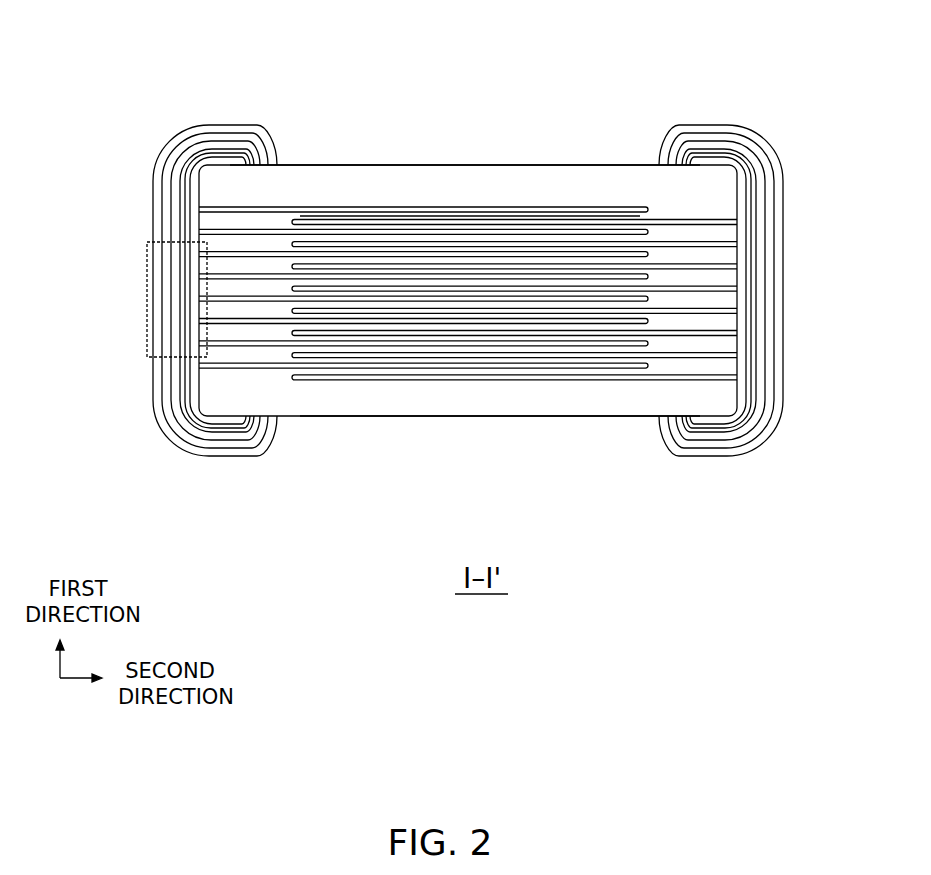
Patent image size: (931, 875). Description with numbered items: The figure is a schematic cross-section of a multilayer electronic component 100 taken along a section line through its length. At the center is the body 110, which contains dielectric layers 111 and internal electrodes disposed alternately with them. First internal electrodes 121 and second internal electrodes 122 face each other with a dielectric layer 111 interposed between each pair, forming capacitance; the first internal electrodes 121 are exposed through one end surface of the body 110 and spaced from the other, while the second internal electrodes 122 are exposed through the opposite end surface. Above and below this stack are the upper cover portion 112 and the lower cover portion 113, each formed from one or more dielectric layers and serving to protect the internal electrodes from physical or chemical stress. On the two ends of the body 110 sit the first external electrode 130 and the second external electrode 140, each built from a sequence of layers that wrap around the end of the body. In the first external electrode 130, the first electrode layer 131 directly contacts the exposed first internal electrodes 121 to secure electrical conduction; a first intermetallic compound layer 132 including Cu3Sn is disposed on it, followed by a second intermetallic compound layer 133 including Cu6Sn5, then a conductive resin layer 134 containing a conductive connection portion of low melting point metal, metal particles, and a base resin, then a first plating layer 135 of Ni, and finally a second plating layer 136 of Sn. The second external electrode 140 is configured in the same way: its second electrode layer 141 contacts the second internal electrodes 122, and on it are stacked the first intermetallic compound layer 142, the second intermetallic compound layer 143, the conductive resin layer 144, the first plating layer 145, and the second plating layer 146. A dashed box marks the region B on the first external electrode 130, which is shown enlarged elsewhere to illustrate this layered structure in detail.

The multilayer electronic component 100 is at (314, 76).
The body 110 is at (465, 417).
The dielectric layer 111 is at (445, 215).
The upper cover portion 112 is at (600, 190).
The lower cover portion 113 is at (545, 402).
The first internal electrode 121 is at (395, 207).
The second internal electrode 122 is at (517, 221).
The first external electrode 130 is at (222, 350).
The first electrode layer 131 is at (270, 424).
The first intermetallic compound layer 132 is at (246, 428).
The second intermetallic compound layer 133 is at (225, 432).
The conductive resin layer 134 is at (210, 440).
The first plating layer 135 is at (182, 444).
The second plating layer 136 is at (179, 327).
The second external electrode 140 is at (717, 350).
The second electrode layer 141 is at (672, 328).
The first intermetallic compound layer 142 is at (697, 326).
The second intermetallic compound layer 143 is at (719, 324).
The conductive resin layer 144 is at (720, 320).
The first plating layer 145 is at (726, 316).
The second plating layer 146 is at (742, 312).
The region B is at (147, 302).